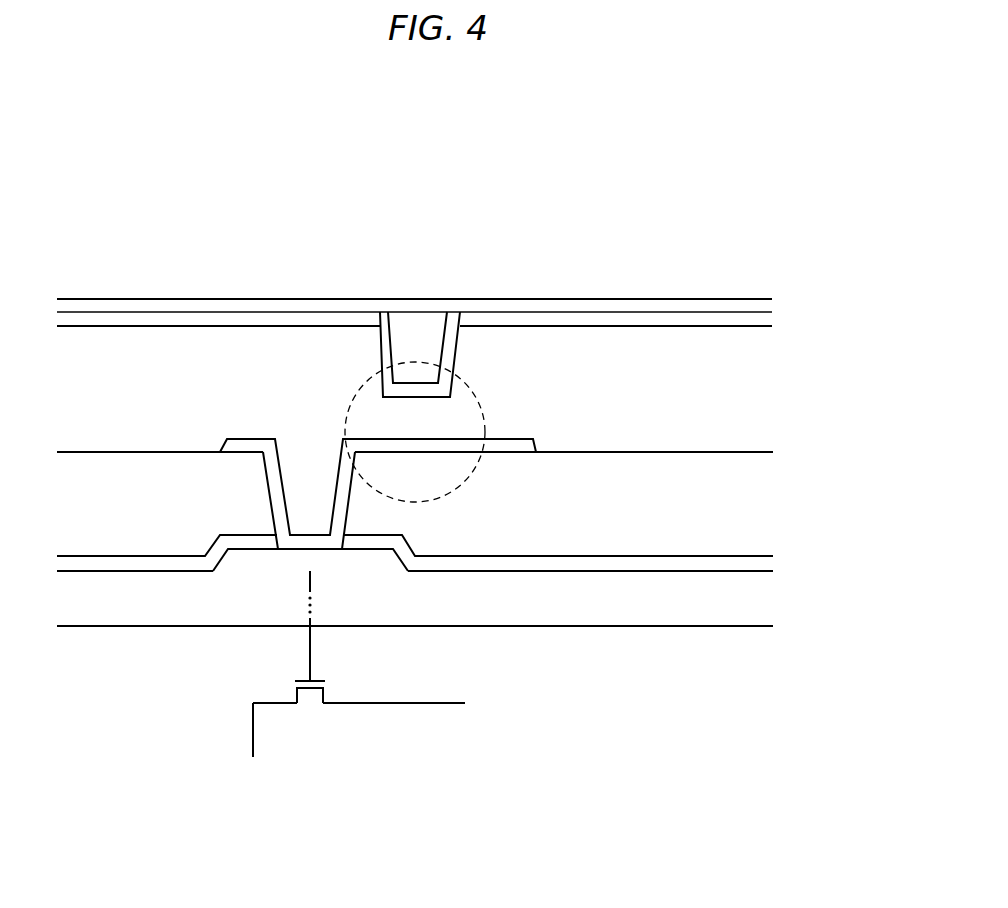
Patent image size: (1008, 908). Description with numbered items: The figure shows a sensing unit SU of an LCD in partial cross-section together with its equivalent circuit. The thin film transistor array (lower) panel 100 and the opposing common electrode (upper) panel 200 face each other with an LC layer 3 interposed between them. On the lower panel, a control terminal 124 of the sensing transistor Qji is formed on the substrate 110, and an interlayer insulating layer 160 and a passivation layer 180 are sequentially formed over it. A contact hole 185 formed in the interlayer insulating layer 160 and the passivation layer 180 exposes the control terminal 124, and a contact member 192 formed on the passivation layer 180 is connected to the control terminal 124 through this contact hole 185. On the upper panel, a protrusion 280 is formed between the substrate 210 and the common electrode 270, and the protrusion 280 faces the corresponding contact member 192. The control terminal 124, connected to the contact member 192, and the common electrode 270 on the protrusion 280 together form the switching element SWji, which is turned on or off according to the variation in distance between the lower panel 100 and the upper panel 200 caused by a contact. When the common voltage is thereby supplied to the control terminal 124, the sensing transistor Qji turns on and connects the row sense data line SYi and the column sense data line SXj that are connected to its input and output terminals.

The LC layer 3 is at (758, 405).
The thin film transistor array panel 100 is at (478, 471).
The substrate 110 is at (122, 610).
The control terminal 124 is at (383, 562).
The interlayer insulating layer 160 is at (760, 565).
The passivation layer 180 is at (444, 403).
The contact hole 185 is at (270, 502).
The contact member 192 is at (240, 446).
The common electrode panel 200 is at (451, 321).
The substrate 210 is at (694, 307).
The common electrode 270 is at (575, 323).
The protrusion 280 is at (440, 346).
The sensing unit SU is at (458, 225).
The switching element SWji is at (477, 398).
The sensing transistor Qji is at (310, 653).
The column sense data line SXj is at (265, 749).
The row sense data line SYi is at (415, 708).